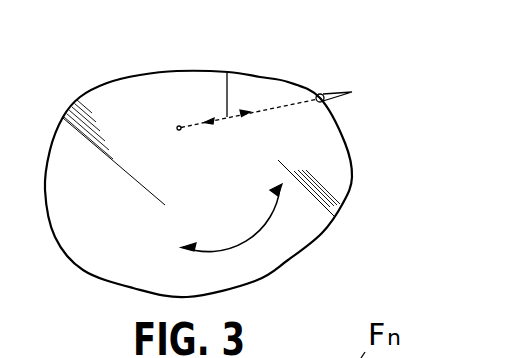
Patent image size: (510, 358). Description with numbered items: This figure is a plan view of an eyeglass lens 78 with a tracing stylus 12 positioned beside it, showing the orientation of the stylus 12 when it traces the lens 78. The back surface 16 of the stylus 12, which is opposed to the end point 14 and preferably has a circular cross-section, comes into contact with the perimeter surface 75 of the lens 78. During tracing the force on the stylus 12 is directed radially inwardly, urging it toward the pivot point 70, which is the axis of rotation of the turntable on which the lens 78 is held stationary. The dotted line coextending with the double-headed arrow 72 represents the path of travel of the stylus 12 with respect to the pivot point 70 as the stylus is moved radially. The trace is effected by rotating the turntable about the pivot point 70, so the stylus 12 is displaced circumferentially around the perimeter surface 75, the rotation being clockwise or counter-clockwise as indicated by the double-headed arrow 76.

The stylus 12 is at (321, 94).
The end point 14 is at (352, 92).
The back surface 16 is at (318, 103).
The pivot point 70 is at (177, 127).
The double-headed arrow 72 is at (223, 72).
The perimeter surface 75 is at (330, 225).
The double-headed arrow 76 is at (252, 230).
The eyeglass lens 78 is at (143, 242).